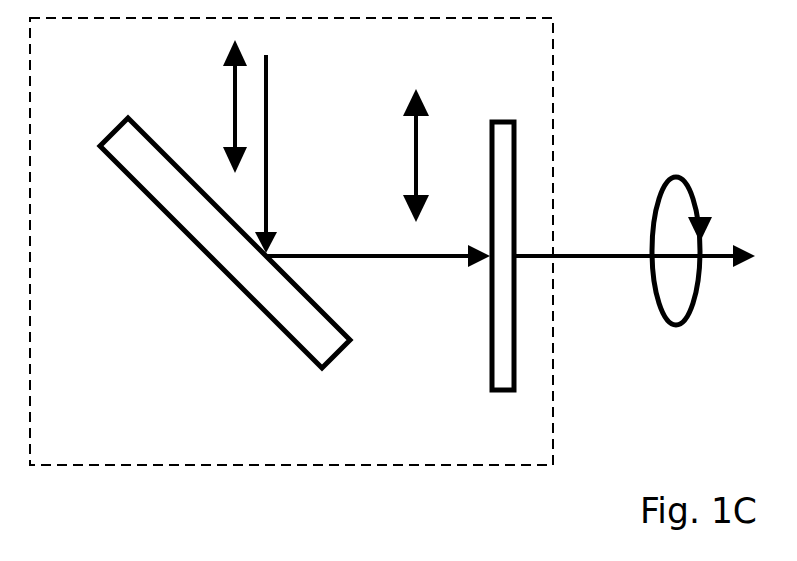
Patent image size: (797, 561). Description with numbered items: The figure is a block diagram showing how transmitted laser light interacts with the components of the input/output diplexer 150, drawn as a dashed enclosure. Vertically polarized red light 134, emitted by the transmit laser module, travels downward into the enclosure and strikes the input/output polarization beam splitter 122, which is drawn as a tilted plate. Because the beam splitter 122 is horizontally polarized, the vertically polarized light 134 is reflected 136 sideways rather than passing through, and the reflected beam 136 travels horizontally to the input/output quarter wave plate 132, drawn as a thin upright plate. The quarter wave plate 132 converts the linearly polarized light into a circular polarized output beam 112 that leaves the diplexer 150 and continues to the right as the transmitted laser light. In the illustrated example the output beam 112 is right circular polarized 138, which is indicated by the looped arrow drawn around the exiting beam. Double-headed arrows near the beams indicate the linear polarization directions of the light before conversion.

The input/output diplexer 150 is at (553, 58).
The input/output polarization beam splitter 122 is at (148, 197).
The vertically polarized red light 134 is at (268, 85).
The reflected light 136 is at (348, 258).
The input/output quarter wave plate 132 is at (492, 365).
The output beam 112 is at (572, 258).
The right circular polarization 138 is at (657, 197).